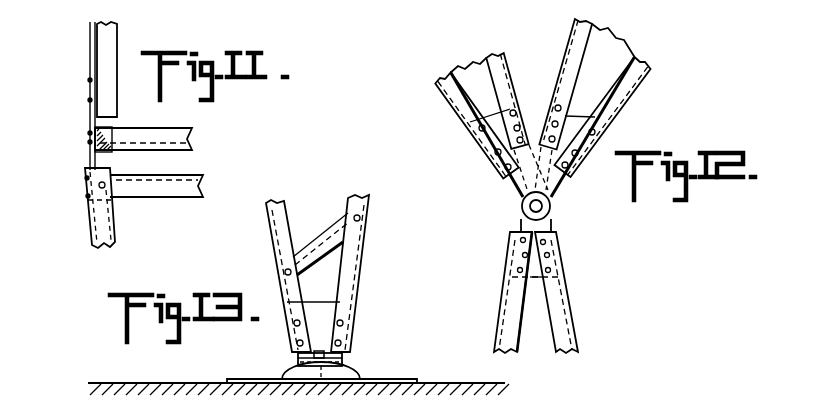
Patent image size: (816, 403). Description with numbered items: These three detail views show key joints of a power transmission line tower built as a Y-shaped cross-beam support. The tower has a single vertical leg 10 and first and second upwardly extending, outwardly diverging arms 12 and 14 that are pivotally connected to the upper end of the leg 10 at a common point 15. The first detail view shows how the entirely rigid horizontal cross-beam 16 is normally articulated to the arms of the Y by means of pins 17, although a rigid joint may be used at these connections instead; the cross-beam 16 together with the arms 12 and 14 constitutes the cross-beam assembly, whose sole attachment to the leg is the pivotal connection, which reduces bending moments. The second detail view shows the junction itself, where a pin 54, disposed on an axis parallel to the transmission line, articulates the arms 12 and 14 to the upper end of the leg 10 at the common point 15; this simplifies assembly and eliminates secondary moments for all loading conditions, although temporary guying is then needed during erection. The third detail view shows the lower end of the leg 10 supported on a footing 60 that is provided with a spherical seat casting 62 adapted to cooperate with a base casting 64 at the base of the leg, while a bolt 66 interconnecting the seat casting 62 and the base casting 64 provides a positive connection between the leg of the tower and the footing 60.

In FIG. 13, the vertical leg 10 is at (352, 258).
In FIG. 12, the vertical leg 10 is at (565, 326).
In FIG. 11, the first arm 12 is at (90, 227).
In FIG. 12, the first arm 12 is at (643, 72).
In FIG. 12, the second arm 14 is at (453, 108).
In FIG. 12, the common point 15 is at (558, 205).
In FIG. 11, the horizontal cross-beam 16 is at (90, 82).
In FIG. 11, the pins 17 is at (90, 137).
In FIG. 12, the pin 54 is at (522, 201).
In FIG. 13, the footing 60 is at (387, 381).
In FIG. 13, the spherical seat casting 62 is at (350, 372).
In FIG. 13, the base casting 64 is at (298, 361).
In FIG. 13, the bolt 66 is at (322, 355).